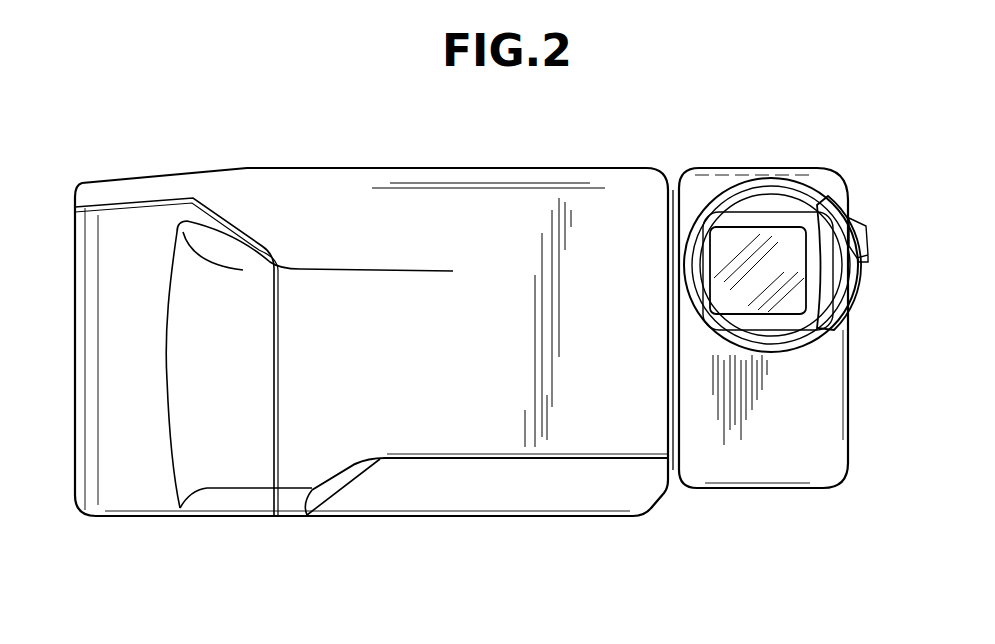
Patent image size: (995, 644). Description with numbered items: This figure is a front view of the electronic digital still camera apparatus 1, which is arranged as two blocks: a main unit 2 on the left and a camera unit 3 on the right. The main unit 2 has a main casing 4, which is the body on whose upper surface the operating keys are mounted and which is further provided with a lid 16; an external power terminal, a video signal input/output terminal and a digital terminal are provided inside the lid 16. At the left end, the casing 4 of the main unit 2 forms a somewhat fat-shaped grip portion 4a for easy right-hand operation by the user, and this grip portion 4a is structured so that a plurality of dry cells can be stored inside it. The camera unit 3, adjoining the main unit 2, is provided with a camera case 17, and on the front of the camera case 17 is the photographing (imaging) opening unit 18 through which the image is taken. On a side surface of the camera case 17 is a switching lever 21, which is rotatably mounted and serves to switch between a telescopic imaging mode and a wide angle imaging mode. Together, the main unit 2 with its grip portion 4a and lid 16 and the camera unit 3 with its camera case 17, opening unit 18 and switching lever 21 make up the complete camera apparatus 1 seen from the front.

The electronic digital still camera apparatus 1 is at (672, 164).
The main unit 2 is at (328, 160).
The camera unit 3 is at (798, 162).
The main casing 4 is at (410, 500).
The grip portion 4a is at (231, 462).
The lid 16 is at (475, 177).
The camera case 17 is at (747, 458).
The photographing opening unit 18 is at (738, 247).
The switching lever 21 is at (857, 227).